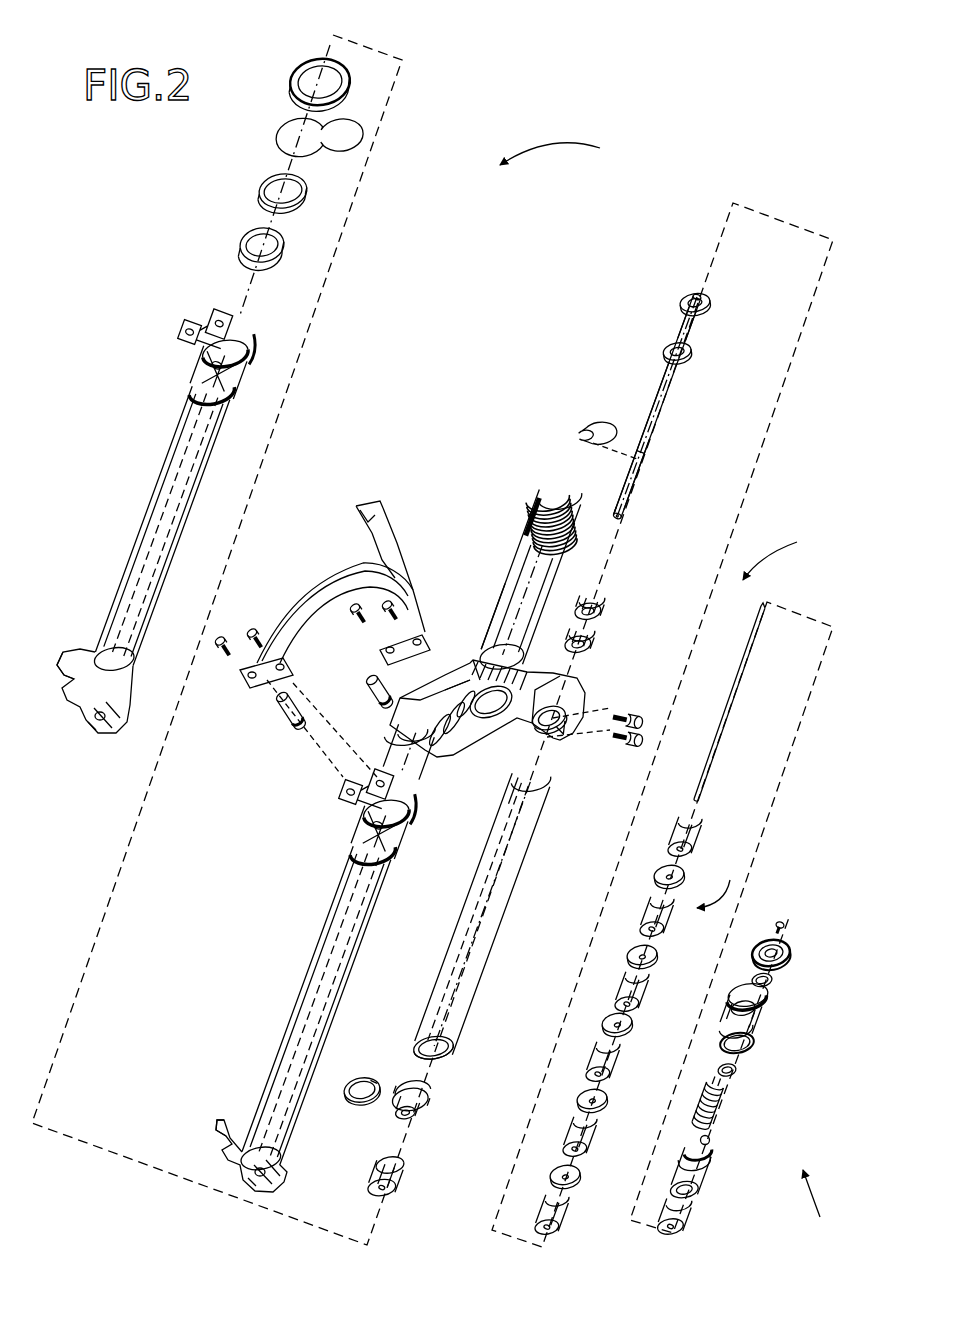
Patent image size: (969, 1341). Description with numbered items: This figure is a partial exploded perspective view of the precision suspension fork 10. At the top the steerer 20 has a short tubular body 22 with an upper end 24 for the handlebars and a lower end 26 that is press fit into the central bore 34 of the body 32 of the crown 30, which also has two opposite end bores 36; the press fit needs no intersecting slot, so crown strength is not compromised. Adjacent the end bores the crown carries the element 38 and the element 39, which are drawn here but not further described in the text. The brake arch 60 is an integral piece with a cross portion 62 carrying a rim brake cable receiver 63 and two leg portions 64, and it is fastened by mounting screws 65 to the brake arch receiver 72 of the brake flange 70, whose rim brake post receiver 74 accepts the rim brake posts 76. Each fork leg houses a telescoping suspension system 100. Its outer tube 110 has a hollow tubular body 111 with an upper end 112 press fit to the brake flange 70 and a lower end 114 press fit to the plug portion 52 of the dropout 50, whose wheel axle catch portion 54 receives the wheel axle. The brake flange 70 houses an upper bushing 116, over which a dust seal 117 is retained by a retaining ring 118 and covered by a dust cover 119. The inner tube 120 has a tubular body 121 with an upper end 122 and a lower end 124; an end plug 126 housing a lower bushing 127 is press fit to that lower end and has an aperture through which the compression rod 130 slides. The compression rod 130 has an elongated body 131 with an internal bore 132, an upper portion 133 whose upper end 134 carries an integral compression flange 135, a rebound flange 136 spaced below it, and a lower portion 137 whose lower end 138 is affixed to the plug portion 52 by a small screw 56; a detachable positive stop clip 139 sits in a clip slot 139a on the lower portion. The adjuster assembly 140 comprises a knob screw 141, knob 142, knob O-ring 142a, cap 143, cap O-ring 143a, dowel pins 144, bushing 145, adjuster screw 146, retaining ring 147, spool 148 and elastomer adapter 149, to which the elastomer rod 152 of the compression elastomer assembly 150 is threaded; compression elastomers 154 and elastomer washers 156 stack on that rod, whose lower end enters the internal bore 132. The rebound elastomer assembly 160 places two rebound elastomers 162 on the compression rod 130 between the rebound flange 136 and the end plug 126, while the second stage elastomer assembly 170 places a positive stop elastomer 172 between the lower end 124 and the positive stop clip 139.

The precision suspension fork 10 is at (551, 155).
The steerer 20 is at (503, 563).
The tubular body 22 is at (548, 557).
The upper end 24 is at (560, 490).
The lower end 26 is at (500, 598).
The crown 30 is at (513, 663).
The body 32 is at (460, 678).
The central bore 34 is at (483, 722).
The end bores 36 is at (632, 745).
The clamp boss 38 is at (533, 727).
The bolt holes 39 is at (645, 740).
The dropout 50 is at (67, 708).
The plug portion 52 is at (114, 699).
The wheel axle catch portion 54 is at (63, 658).
The small screw 56 is at (93, 717).
The brake arch 60 is at (305, 585).
The cross portion 62 is at (340, 573).
The rim brake cable receiver 63 is at (366, 503).
The leg portions 64 is at (293, 607).
The mounting screws 65 is at (252, 628).
The brake flange 70 is at (184, 365).
The brake arch receiver 72 is at (183, 344).
The rim brake post receiver 74 is at (238, 354).
The rim brake posts 76 is at (278, 708).
The telescoping suspension system 100 is at (789, 555).
The outer tube 110 is at (135, 517).
The tubular body 111 is at (146, 574).
The upper end 112 is at (209, 419).
The lower end 114 is at (116, 637).
The upper bushing 116 is at (240, 250).
The dust seal 117 is at (259, 190).
The retaining ring 118 is at (275, 135).
The dust cover 119 is at (292, 74).
The inner tube 120 is at (417, 773).
The tubular body 121 is at (468, 971).
The upper end 122 is at (518, 790).
The lower end 124 is at (431, 1053).
The end plug 126 is at (428, 1112).
The lower bushing 127 is at (348, 1086).
The compression rod 130 is at (673, 423).
The elongated body 131 is at (683, 373).
The internal bore 132 is at (623, 521).
The upper portion 133 is at (685, 307).
The upper end 134 is at (705, 307).
The compression flange 135 is at (687, 293).
The rebound flange 136 is at (667, 350).
The lower portion 137 is at (637, 480).
The lower end 138 is at (618, 522).
The positive stop clip 139 is at (560, 423).
The clip slot 139a is at (647, 456).
The adjuster assembly 140 is at (814, 1204).
The knob screw 141 is at (783, 924).
The knob 142 is at (789, 952).
The knob O-ring 142a is at (772, 982).
The cap 143 is at (766, 1008).
The cap O-ring 143a is at (729, 1078).
The dowel pins 144 is at (754, 1042).
The bushing 145 is at (718, 1070).
The adjuster screw 146 is at (725, 1095).
The retaining ring 147 is at (711, 1141).
The spool 148 is at (712, 1177).
The elastomer adapter 149 is at (693, 1214).
The compression elastomer assembly 150 is at (720, 883).
The elastomer rod 152 is at (735, 700).
The compression elastomers 154 is at (672, 822).
The elastomer washers 156 is at (655, 874).
The rebound elastomer assembly 160 is at (623, 593).
The rebound elastomers 162 is at (598, 640).
The second stage elastomer assembly 170 is at (410, 1187).
The positive stop elastomer 172 is at (380, 1172).